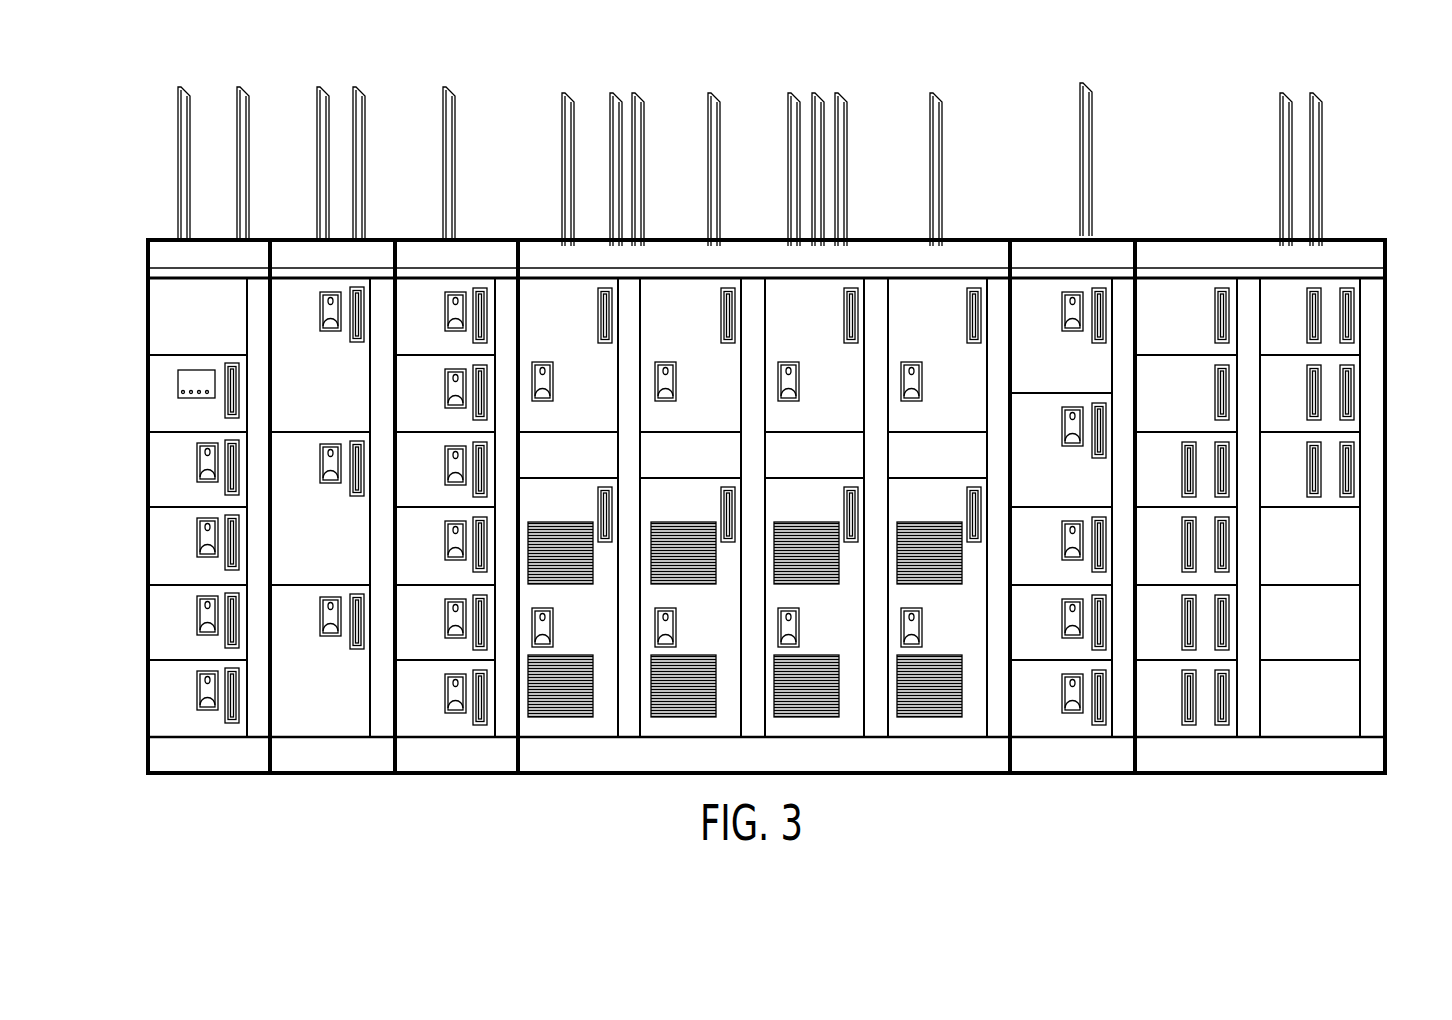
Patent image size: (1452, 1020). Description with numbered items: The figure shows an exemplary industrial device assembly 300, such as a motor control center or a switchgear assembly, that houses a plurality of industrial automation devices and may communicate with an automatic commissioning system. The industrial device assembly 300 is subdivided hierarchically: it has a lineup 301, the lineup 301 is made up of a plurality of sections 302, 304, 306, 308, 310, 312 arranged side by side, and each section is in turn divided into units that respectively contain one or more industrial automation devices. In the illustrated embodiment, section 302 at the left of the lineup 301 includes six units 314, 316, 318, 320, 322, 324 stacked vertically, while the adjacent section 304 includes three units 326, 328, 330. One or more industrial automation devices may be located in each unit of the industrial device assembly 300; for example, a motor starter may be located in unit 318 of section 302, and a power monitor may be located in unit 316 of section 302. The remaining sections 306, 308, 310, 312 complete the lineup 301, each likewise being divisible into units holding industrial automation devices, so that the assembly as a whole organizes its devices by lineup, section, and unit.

The industrial device assembly 300 is at (967, 77).
The lineup 301 is at (1385, 352).
The section 302 is at (148, 318).
The section 304 is at (370, 240).
The section 306 is at (487, 240).
The section 308 is at (675, 240).
The section 310 is at (1102, 240).
The section 312 is at (1215, 240).
The unit 314 is at (178, 312).
The unit 316 is at (168, 378).
The unit 318 is at (168, 462).
The unit 320 is at (168, 538).
The unit 322 is at (170, 612).
The unit 324 is at (170, 690).
The unit 326 is at (302, 272).
The unit 328 is at (294, 545).
The unit 330 is at (332, 697).